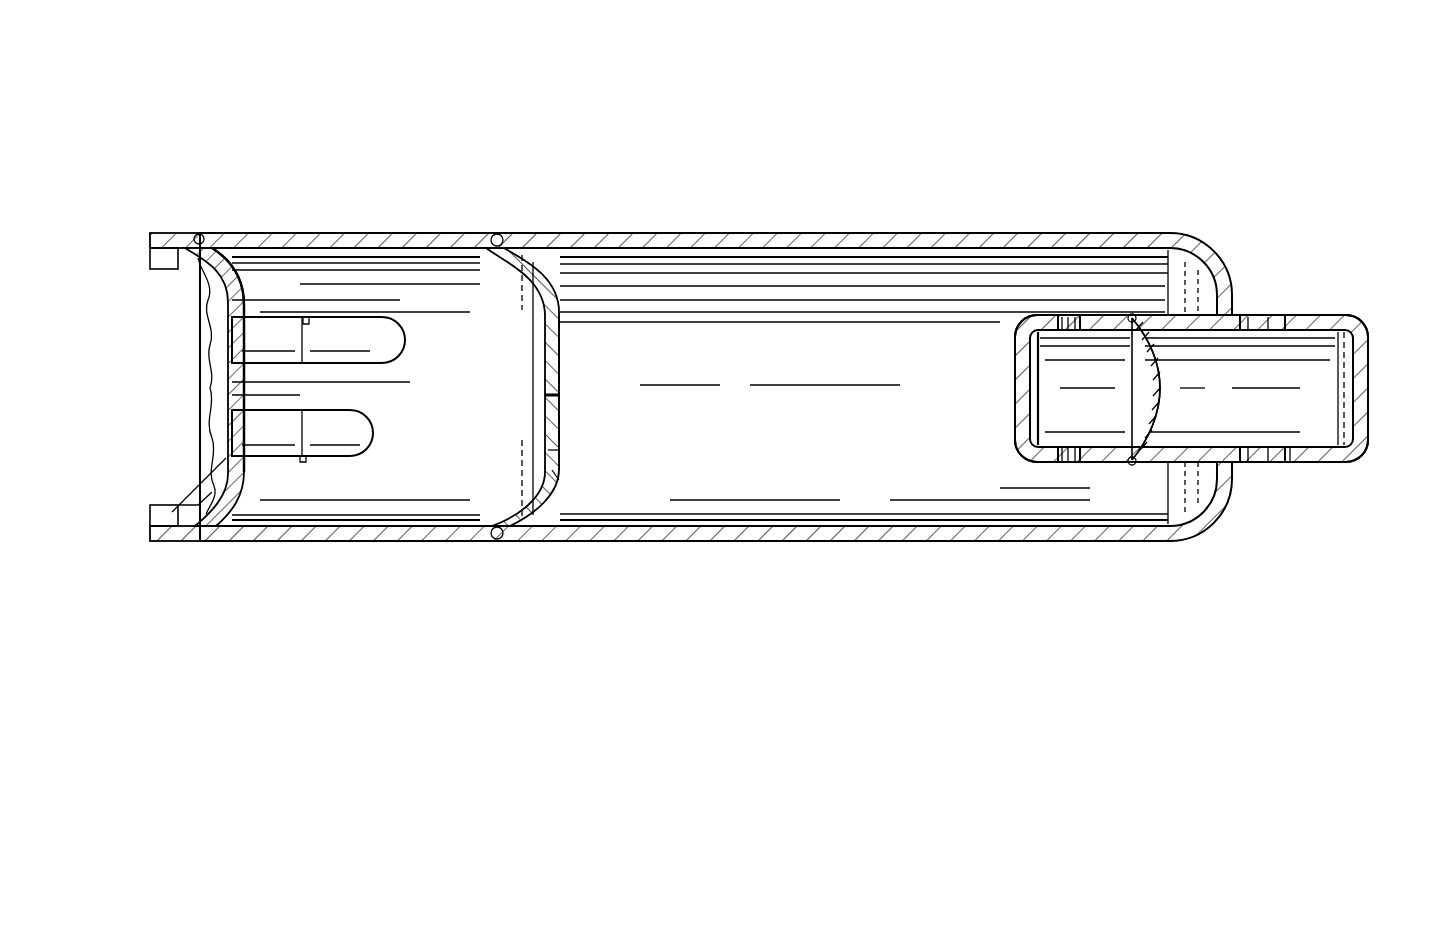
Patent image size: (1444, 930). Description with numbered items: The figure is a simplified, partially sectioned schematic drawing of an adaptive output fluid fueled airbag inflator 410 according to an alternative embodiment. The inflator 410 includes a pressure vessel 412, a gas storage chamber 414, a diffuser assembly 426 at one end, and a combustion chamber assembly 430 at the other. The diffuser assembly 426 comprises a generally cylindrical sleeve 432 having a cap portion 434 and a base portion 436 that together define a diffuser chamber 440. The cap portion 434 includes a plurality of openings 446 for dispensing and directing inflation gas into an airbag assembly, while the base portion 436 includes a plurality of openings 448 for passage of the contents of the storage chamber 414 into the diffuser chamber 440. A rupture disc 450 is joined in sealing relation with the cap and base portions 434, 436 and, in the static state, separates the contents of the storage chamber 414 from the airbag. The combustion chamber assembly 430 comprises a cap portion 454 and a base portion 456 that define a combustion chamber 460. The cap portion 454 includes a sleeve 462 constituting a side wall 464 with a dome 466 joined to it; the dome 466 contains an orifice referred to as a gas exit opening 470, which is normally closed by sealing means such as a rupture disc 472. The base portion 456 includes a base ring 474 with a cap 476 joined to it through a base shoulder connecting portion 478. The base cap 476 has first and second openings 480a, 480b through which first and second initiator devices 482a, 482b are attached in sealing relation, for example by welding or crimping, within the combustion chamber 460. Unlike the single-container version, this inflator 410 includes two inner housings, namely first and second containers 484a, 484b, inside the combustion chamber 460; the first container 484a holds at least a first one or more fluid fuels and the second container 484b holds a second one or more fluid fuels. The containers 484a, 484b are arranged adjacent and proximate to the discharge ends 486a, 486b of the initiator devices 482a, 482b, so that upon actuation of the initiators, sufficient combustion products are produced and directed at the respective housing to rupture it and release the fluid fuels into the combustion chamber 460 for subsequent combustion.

The adaptive output fluid fueled airbag inflator 410 is at (813, 188).
The pressure vessel 412 is at (689, 541).
The gas storage chamber 414 is at (857, 478).
The diffuser assembly 426 is at (1331, 313).
The combustion chamber assembly 430 is at (294, 543).
The generally cylindrical sleeve 432 is at (1185, 465).
The cap portion 434 is at (1322, 466).
The base portion 436 is at (1012, 385).
The diffuser chamber 440 is at (1322, 418).
The openings 446 is at (1276, 318).
The openings 448 is at (1088, 326).
The rupture disc 450 is at (1163, 386).
The cap portion 454 is at (460, 536).
The base portion 456 is at (230, 284).
The combustion chamber 460 is at (375, 262).
The sleeve 462 is at (280, 232).
The side wall 464 is at (435, 240).
The dome 466 is at (556, 494).
The gas exit opening 470 is at (534, 404).
The rupture disc 472 is at (563, 385).
The base ring 474 is at (158, 232).
The cap 476 is at (225, 383).
The base shoulder connecting portion 478 is at (218, 478).
The first opening 480a is at (229, 348).
The second opening 480b is at (229, 448).
The first initiator device 482a is at (268, 340).
The second initiator device 482b is at (268, 433).
The first container 484a is at (339, 338).
The second container 484b is at (334, 432).
The discharge end 486a is at (306, 318).
The discharge end 486b is at (303, 462).